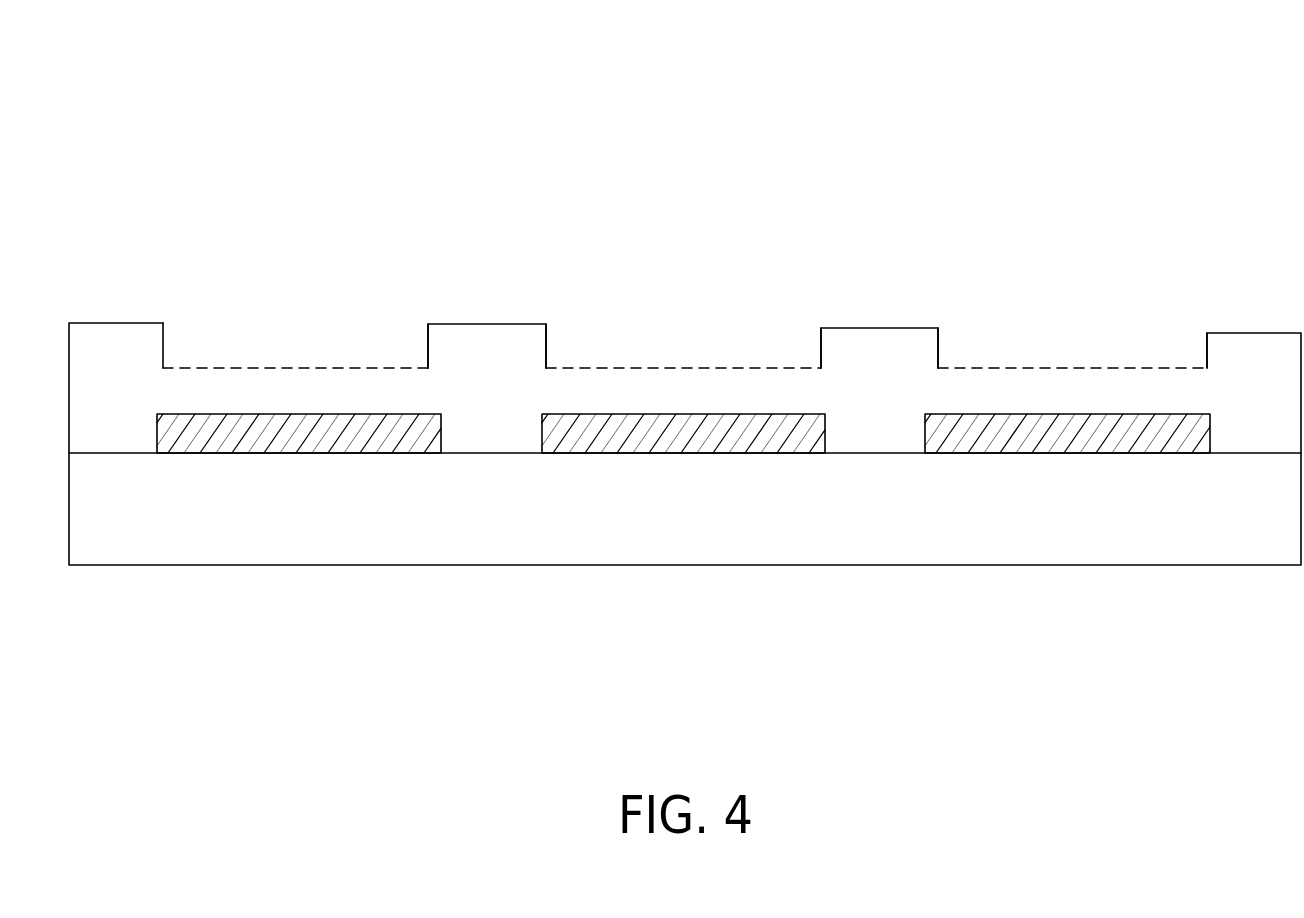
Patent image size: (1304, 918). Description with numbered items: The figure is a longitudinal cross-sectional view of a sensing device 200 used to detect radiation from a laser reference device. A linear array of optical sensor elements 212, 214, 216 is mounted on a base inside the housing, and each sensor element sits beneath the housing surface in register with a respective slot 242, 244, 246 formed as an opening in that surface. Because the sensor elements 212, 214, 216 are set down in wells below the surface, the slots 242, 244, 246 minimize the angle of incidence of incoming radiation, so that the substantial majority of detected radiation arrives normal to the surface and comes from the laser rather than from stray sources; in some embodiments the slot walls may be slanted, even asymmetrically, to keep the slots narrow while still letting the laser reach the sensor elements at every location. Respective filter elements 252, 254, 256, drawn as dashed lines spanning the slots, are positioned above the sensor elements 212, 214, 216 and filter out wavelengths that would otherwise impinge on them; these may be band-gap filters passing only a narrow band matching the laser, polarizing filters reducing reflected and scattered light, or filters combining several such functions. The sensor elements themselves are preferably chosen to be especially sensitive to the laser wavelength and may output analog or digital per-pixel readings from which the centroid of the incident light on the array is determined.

The sensing device 200 is at (400, 108).
The optical sensor element 212 is at (273, 455).
The optical sensor element 214 is at (685, 455).
The optical sensor element 216 is at (1095, 455).
The slot 242 is at (242, 343).
The slot 244 is at (602, 343).
The slot 246 is at (962, 343).
The filter element 252 is at (340, 365).
The filter element 254 is at (717, 365).
The filter element 256 is at (1095, 365).